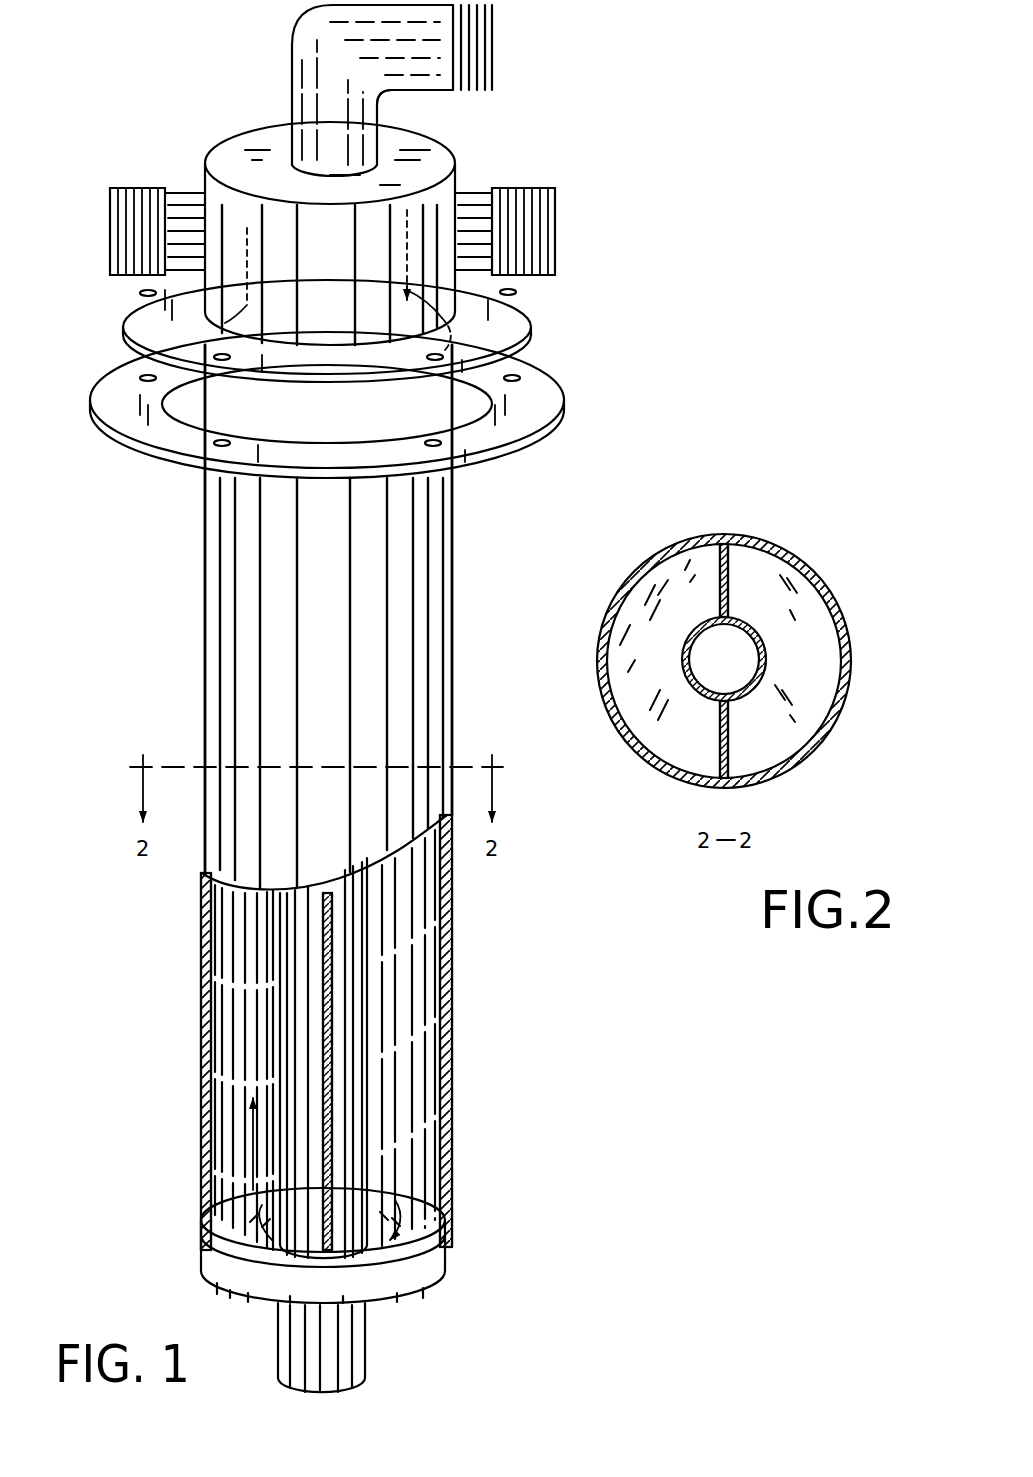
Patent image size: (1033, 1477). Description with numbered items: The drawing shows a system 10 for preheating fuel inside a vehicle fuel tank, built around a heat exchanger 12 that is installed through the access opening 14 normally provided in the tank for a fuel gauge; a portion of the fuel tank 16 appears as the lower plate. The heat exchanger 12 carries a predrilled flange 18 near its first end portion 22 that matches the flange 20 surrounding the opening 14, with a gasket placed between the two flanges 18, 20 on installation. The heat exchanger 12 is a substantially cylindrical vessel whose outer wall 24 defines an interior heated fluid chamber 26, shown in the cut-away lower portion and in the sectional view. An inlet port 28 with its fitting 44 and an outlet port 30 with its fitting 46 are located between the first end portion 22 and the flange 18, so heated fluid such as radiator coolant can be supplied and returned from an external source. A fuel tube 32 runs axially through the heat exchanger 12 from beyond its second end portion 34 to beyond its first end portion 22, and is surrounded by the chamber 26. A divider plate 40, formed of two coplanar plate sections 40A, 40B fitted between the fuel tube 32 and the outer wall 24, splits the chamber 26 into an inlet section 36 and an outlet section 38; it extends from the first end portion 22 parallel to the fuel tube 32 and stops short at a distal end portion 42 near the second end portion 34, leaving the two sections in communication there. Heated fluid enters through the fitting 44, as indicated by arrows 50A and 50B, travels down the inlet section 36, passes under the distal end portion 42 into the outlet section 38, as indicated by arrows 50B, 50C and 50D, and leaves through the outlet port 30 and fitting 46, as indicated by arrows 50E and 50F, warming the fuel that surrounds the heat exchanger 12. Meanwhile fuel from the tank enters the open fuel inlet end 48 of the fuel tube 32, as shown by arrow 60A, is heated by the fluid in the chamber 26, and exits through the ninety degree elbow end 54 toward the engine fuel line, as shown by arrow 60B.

In FIG. 1, the system for preheating fuel 10 is at (546, 108).
In FIG. 1, the heat exchanger 12 is at (453, 690).
In FIG. 1, the access opening 14 is at (468, 398).
In FIG. 1, the fuel tank 16 is at (564, 410).
In FIG. 1, the flange 18 is at (531, 300).
In FIG. 1, the flange 20 is at (546, 434).
In FIG. 1, the first end portion 22 is at (448, 160).
In FIG. 1, the outer wall 24 is at (453, 865).
In FIG. 2, the outer wall 24 is at (830, 580).
In FIG. 1, the heated fluid chamber 26 is at (403, 1083).
In FIG. 1, the inlet port 28 is at (458, 186).
In FIG. 1, the outlet port 30 is at (230, 228).
In FIG. 1, the fuel tube 32 is at (370, 937).
In FIG. 2, the fuel tube 32 is at (768, 649).
In FIG. 1, the second end portion 34 is at (422, 1262).
In FIG. 2, the inlet section 36 is at (808, 693).
In FIG. 2, the outlet section 38 is at (657, 712).
In FIG. 1, the divider plate 40 is at (336, 1022).
In FIG. 2, the plate section 40A is at (740, 545).
In FIG. 2, the plate section 40B is at (735, 740).
In FIG. 1, the distal end portion 42 is at (395, 1272).
In FIG. 1, the fitting 44 is at (556, 183).
In FIG. 1, the fitting 46 is at (132, 278).
In FIG. 1, the fuel inlet end 48 is at (365, 1370).
In FIG. 1, the arrow 50A is at (558, 230).
In FIG. 1, the arrow 50B is at (512, 355).
In FIG. 1, the arrow 50C is at (385, 1193).
In FIG. 1, the arrow 50D is at (253, 1188).
In FIG. 1, the arrow 50E is at (112, 352).
In FIG. 1, the arrow 50F is at (56, 232).
In FIG. 1, the fuel outlet ninety degree elbow end 54 is at (417, 93).
In FIG. 1, the arrow 60A is at (323, 1395).
In FIG. 1, the arrow 60B is at (500, 49).